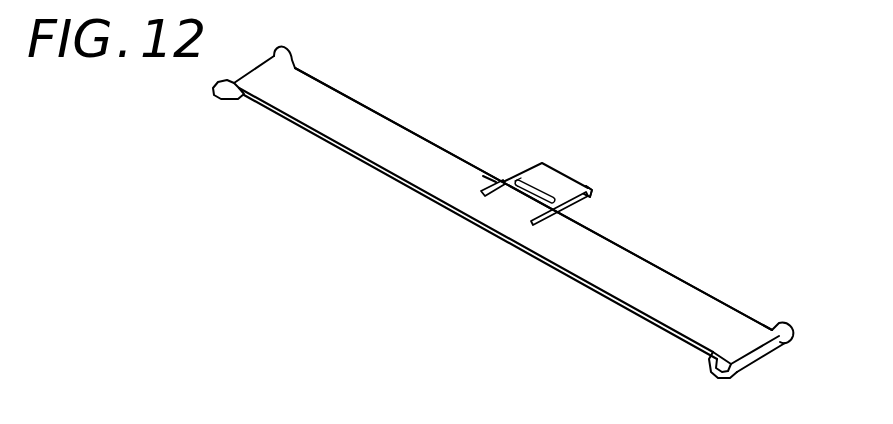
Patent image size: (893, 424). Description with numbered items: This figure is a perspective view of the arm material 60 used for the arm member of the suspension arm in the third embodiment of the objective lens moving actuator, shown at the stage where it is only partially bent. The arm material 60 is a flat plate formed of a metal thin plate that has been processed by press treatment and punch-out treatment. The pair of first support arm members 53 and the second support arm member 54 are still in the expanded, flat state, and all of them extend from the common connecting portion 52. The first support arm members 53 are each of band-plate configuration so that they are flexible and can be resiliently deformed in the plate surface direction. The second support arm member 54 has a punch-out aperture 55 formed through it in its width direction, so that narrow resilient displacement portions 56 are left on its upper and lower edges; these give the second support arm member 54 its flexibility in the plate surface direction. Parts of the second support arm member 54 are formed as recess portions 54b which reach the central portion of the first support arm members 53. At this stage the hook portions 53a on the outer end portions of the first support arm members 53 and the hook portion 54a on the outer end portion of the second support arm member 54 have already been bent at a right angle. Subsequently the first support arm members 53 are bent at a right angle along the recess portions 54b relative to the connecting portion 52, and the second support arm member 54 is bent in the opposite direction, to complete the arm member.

The connecting portion 52 is at (502, 225).
The first support arm member 53 is at (403, 140).
The hook portion 53a is at (217, 92).
The second support arm member 54 is at (563, 173).
The hook portion 54a is at (591, 189).
The recess portion 54b is at (482, 172).
The punch-out aperture 55 is at (535, 182).
The resilient displacement portion 56 is at (518, 174).
The arm material 60 is at (351, 100).